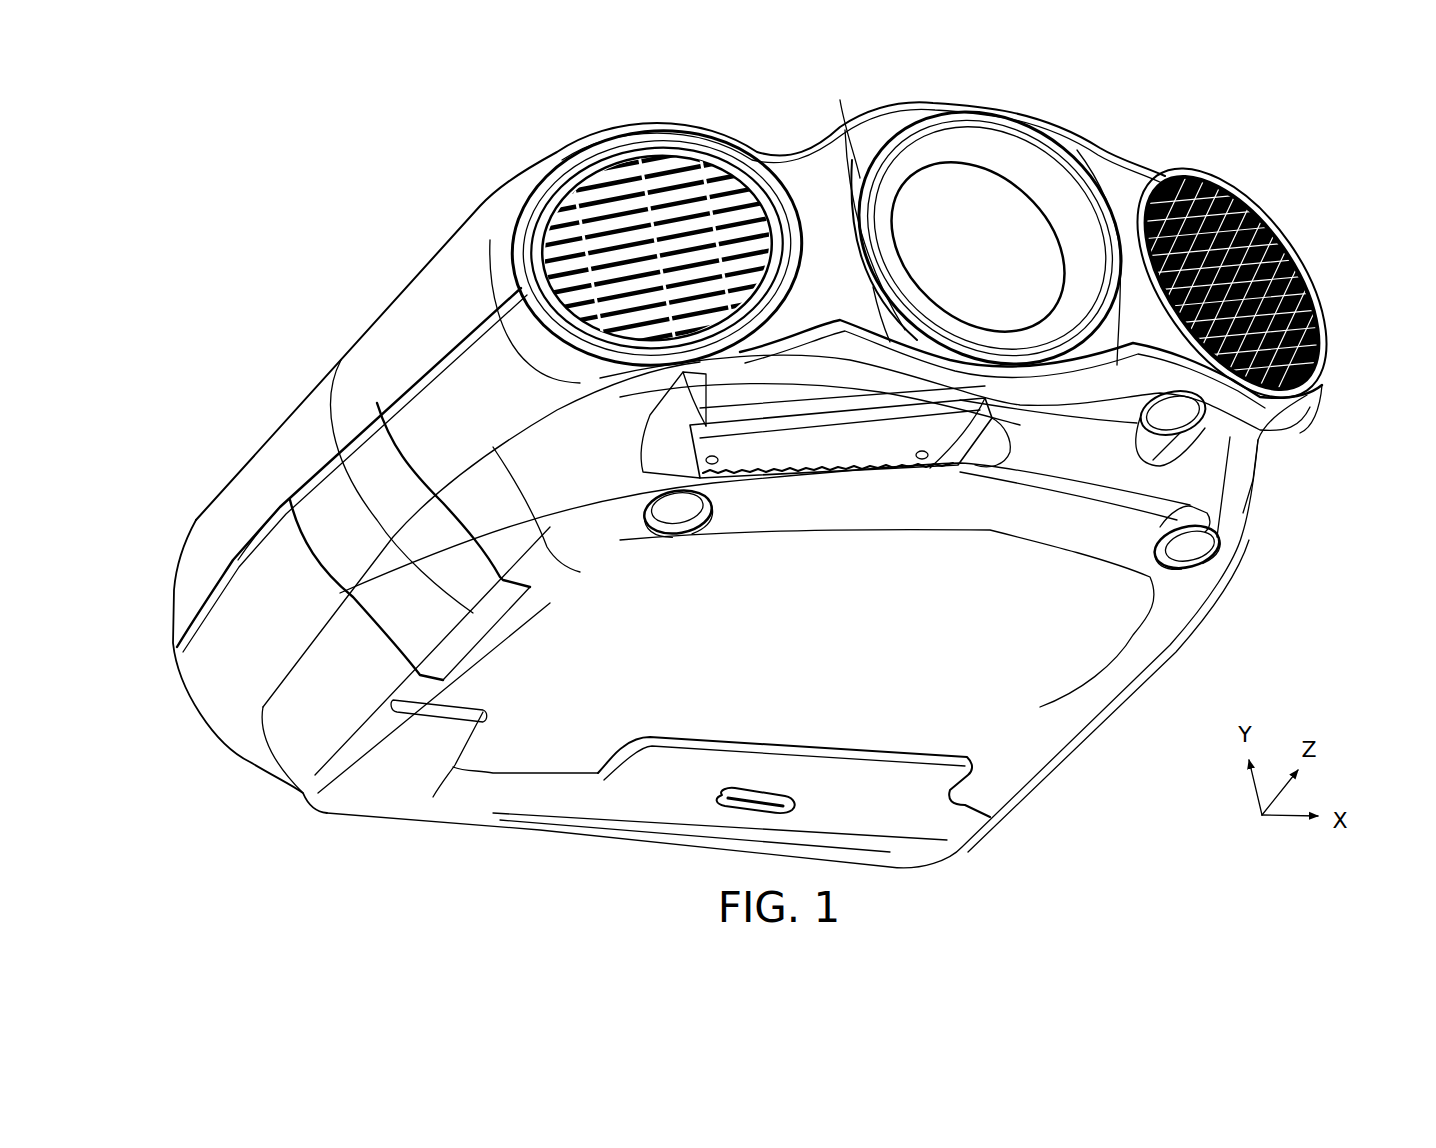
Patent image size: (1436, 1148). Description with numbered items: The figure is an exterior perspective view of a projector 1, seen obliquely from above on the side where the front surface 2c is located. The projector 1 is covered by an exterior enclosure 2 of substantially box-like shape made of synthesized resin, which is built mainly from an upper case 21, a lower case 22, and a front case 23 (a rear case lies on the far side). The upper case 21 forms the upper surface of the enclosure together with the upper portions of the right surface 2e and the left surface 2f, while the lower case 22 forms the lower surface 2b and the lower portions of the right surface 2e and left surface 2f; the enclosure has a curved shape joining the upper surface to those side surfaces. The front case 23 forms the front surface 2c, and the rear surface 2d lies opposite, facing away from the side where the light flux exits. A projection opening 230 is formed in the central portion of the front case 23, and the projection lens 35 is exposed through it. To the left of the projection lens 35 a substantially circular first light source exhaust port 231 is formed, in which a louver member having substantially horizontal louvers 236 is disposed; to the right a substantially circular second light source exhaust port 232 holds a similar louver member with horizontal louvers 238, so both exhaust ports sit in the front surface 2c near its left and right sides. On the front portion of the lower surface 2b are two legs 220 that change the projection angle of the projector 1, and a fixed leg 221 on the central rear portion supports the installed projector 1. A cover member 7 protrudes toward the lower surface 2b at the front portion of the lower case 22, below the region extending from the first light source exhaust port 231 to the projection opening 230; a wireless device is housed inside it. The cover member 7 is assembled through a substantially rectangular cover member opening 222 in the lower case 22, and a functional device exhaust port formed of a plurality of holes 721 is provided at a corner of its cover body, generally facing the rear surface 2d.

The projector 1 is at (256, 298).
The exterior enclosure 2 is at (377, 307).
The upper case 21 is at (428, 264).
The lower case 22 is at (1049, 691).
The front case 23 is at (788, 163).
The lower surface 2b is at (598, 660).
The front surface 2c is at (828, 155).
The rear surface 2d is at (437, 838).
The right surface 2e is at (1303, 467).
The left surface 2f is at (257, 482).
The projection lens 35 is at (963, 183).
The legs 220 is at (675, 520).
The fixed leg 221 is at (767, 790).
The cover member opening 222 is at (975, 473).
The projection opening 230 is at (920, 340).
The first light source exhaust port 231 is at (513, 190).
The second light source exhaust port 232 is at (1152, 182).
The louvers 236 is at (583, 152).
The louvers 238 is at (1237, 187).
The cover member 7 is at (880, 455).
The holes 721 is at (777, 473).